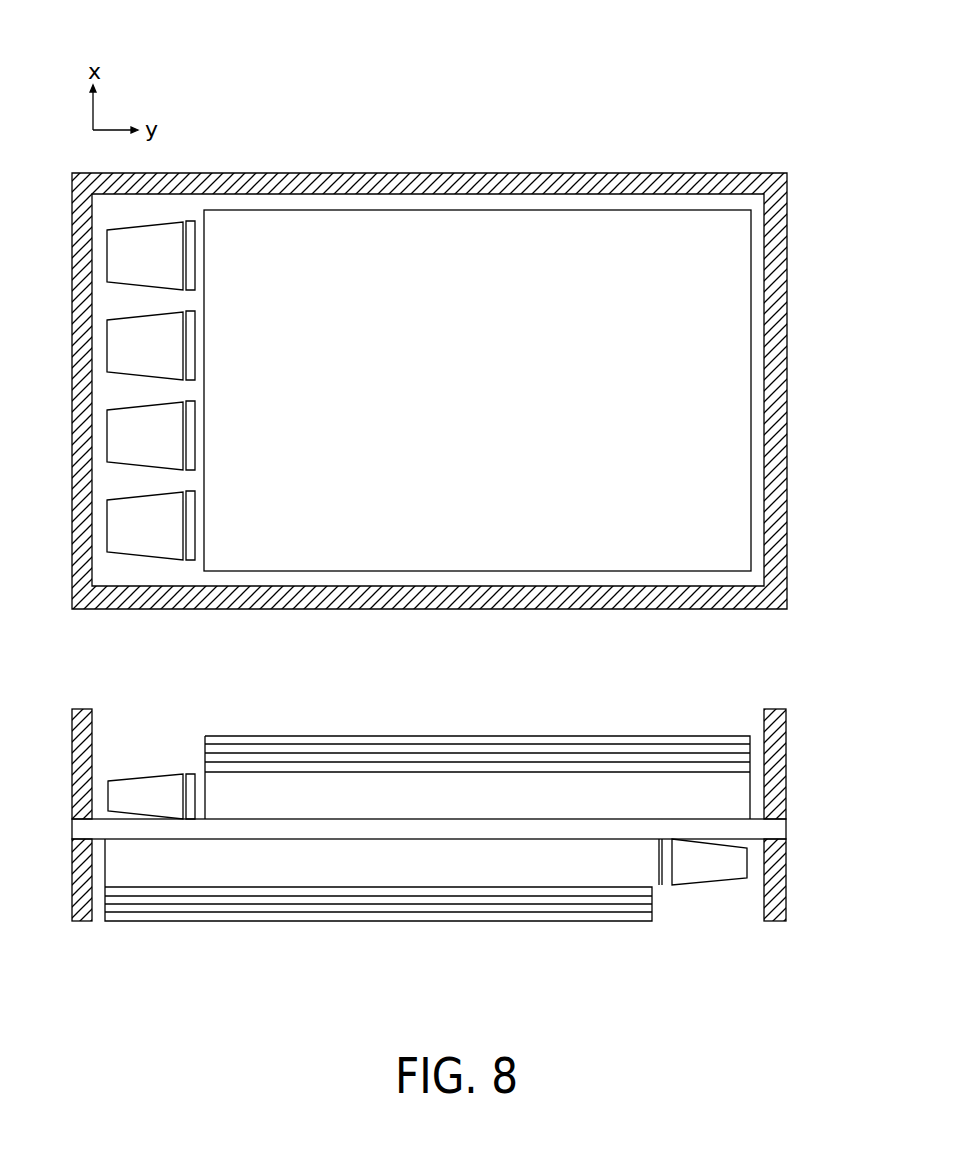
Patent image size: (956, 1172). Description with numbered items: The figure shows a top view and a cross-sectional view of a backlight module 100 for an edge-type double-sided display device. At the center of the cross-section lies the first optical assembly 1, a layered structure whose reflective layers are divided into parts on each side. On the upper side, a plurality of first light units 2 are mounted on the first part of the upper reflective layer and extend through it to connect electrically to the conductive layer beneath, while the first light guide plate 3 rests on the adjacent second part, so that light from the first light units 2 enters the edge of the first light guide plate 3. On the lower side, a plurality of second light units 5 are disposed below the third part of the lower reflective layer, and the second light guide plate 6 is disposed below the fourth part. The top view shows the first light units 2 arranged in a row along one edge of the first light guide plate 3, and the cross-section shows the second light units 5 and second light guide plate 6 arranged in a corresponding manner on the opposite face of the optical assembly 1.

The display device 100 is at (777, 39).
The first optical assembly 1 is at (782, 826).
The first light units 2 is at (115, 433).
The first light guide plate 3 is at (752, 408).
The second light units 5 is at (742, 861).
The second light guide plate 6 is at (115, 866).